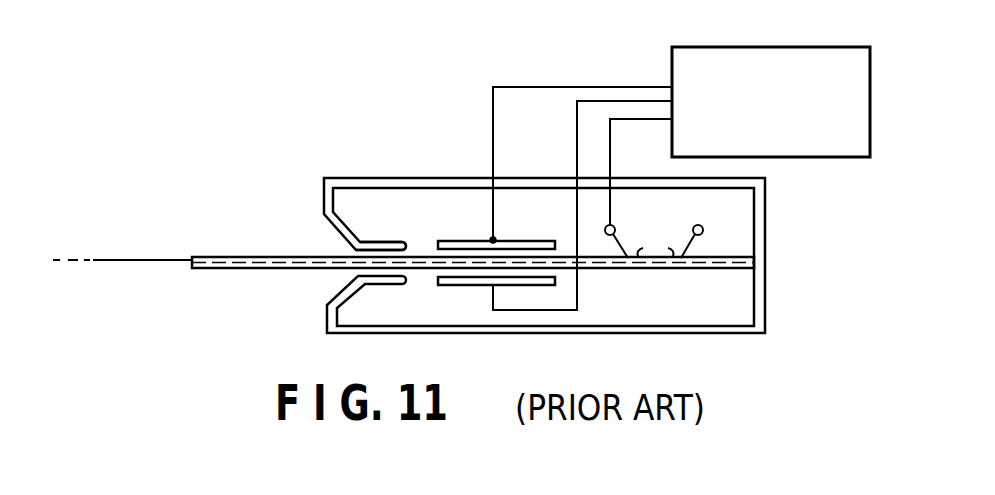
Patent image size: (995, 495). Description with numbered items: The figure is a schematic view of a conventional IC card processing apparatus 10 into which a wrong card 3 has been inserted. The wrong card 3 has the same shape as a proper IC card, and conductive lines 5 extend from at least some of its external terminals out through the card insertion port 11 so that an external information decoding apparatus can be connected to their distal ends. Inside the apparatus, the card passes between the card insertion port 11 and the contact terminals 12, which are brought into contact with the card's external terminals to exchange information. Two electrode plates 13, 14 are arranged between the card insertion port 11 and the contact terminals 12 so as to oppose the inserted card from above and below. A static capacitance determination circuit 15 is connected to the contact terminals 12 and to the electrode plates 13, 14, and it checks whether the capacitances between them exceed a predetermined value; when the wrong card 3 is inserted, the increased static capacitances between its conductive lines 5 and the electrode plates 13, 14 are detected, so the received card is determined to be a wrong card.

The wrong card 3 is at (232, 255).
The conductive lines 5 is at (133, 259).
The IC card processing apparatus 10 is at (338, 177).
The card insertion port 11 is at (345, 250).
The contact terminals 12 is at (685, 243).
The electrode plate 13 is at (512, 242).
The electrode plate 14 is at (457, 287).
The static capacitance determination circuit 15 is at (837, 158).